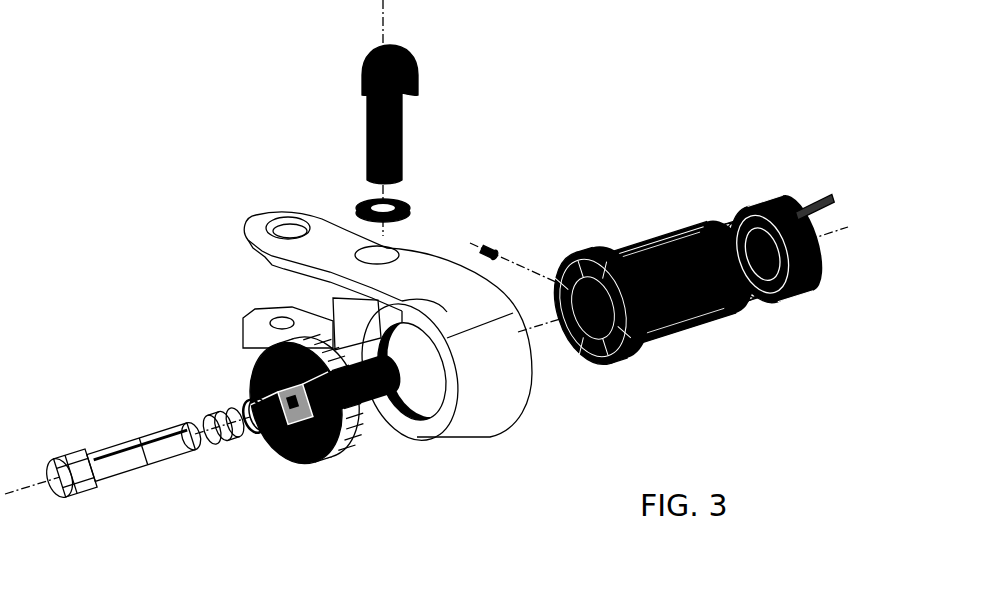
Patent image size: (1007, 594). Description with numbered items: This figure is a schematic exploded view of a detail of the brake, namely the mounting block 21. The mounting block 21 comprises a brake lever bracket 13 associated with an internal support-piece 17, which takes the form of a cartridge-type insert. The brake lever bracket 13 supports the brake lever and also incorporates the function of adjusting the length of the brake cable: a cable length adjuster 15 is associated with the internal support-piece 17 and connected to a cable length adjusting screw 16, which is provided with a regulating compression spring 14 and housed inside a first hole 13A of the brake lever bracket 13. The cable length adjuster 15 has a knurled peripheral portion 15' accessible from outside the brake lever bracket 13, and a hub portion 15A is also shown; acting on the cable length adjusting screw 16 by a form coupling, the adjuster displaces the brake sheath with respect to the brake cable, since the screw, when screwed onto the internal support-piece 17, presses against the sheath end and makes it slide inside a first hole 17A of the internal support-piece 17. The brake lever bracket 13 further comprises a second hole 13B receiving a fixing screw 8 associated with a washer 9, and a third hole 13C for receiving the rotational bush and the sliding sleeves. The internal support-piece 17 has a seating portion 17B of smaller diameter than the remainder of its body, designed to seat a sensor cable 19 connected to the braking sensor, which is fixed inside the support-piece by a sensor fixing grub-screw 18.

The fixing screw 8 is at (390, 114).
The washer 9 is at (383, 210).
The brake lever bracket 13 is at (344, 311).
The first hole 13A is at (415, 386).
The second hole 13B is at (374, 254).
The third hole 13C is at (282, 229).
The regulating compression spring 14 is at (226, 419).
The cable length adjuster 15 is at (294, 459).
The gear hub 15A is at (266, 430).
The knurled peripheral portion 15' is at (329, 448).
The cable length adjusting screw 16 is at (124, 457).
The internal support-piece 17 is at (703, 276).
The first hole 17A is at (572, 362).
The seating portion 17B is at (758, 291).
The sensor fixing grub-screw 18 is at (497, 258).
The sensor cable 19 is at (817, 222).
The mounting block 21 is at (652, 183).